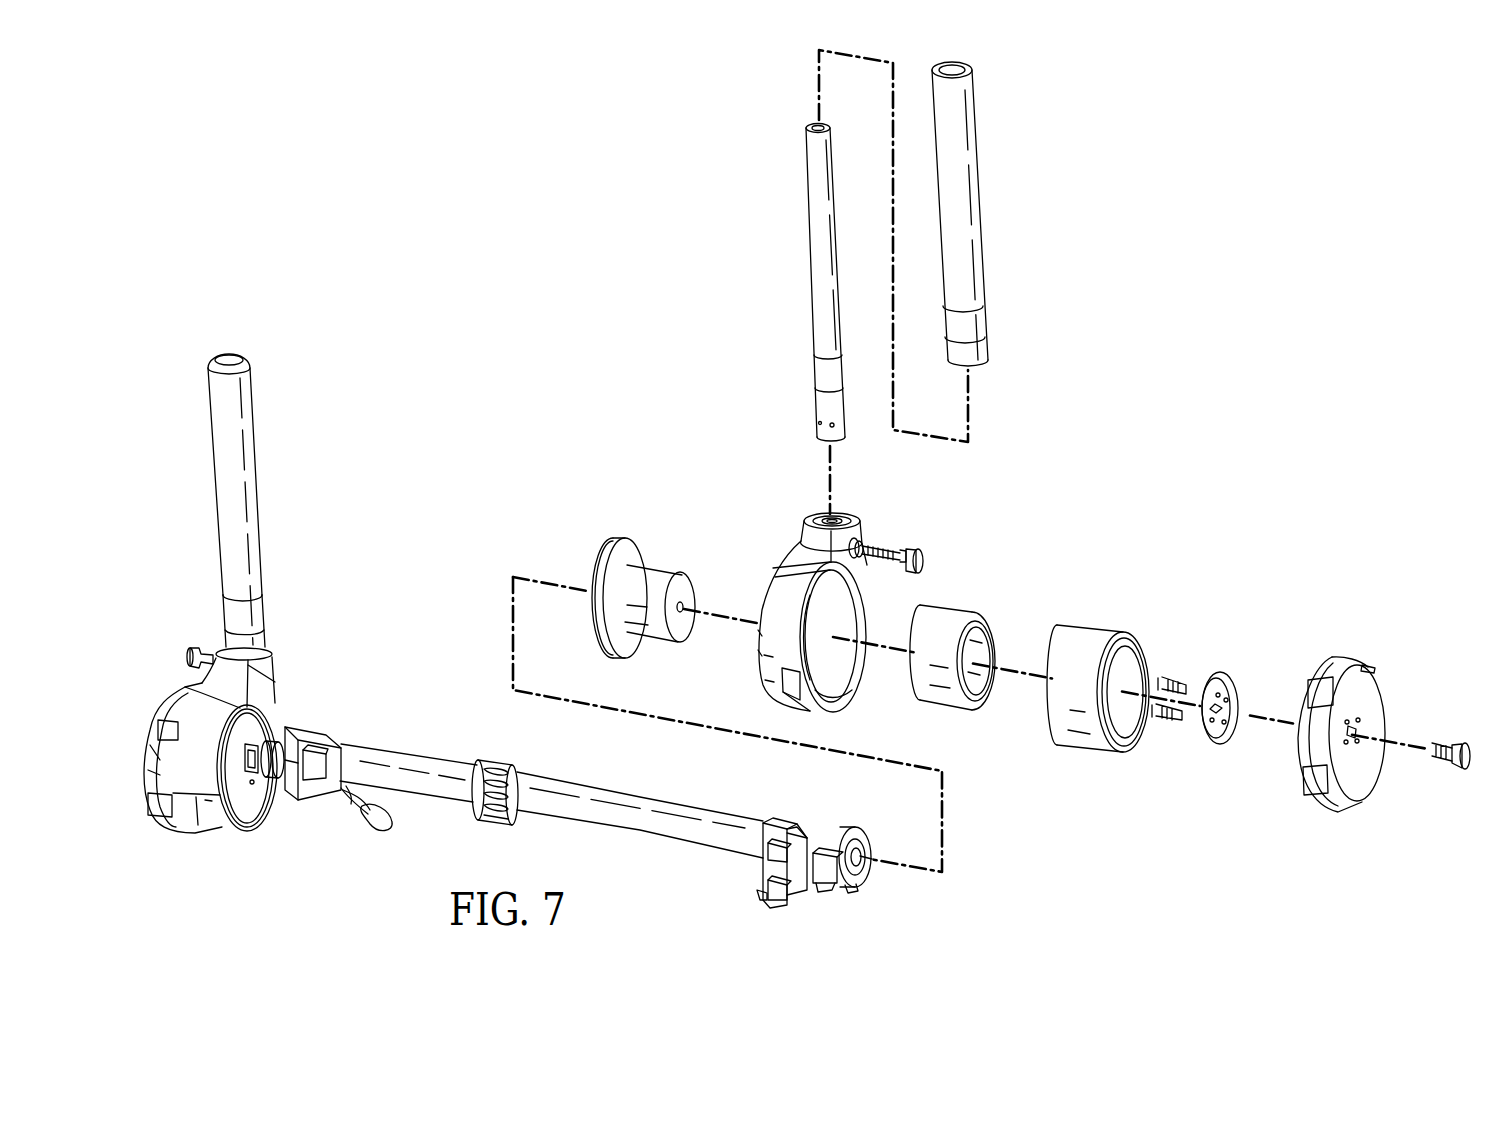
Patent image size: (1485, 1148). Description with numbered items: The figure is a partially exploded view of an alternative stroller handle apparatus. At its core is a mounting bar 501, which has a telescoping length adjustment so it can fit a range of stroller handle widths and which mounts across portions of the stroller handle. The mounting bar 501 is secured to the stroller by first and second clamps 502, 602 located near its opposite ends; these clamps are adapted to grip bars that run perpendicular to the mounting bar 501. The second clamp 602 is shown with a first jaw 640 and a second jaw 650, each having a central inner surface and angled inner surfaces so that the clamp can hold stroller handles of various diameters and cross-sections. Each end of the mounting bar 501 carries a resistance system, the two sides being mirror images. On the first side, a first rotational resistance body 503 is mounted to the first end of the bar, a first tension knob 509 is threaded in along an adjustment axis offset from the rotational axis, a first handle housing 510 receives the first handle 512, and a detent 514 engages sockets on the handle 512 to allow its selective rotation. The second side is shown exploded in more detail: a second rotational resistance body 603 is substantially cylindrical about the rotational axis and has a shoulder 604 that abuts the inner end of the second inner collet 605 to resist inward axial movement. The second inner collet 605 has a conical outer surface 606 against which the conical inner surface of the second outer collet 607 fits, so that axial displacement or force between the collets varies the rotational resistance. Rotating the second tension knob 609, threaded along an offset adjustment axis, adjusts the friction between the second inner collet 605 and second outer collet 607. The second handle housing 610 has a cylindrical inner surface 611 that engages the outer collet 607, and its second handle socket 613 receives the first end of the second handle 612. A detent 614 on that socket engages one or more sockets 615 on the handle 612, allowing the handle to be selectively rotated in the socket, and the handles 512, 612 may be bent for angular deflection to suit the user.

The mounting bar 501 is at (611, 799).
The first clamp 502 is at (371, 724).
The first rotational resistance body 503 is at (262, 803).
The first tension knob 509 is at (176, 696).
The first handle housing 510 is at (234, 828).
The first handle 512 is at (263, 486).
The detent 514 is at (192, 652).
The second clamp 602 is at (864, 814).
The second rotational resistance body 603 is at (698, 542).
The shoulder 604 is at (620, 646).
The second inner collet 605 is at (950, 705).
The conical outer surface 606 is at (952, 659).
The second outer collet 607 is at (1110, 631).
The second tension knob 609 is at (1350, 666).
The second handle housing 610 is at (780, 587).
The cylindrical inner surface 611 is at (826, 685).
The second handle 612 is at (812, 260).
The second handle socket 613 is at (824, 518).
The detent 614 is at (916, 551).
The sockets 615 is at (830, 424).
The first jaw 640 is at (817, 845).
The second jaw 650 is at (772, 820).